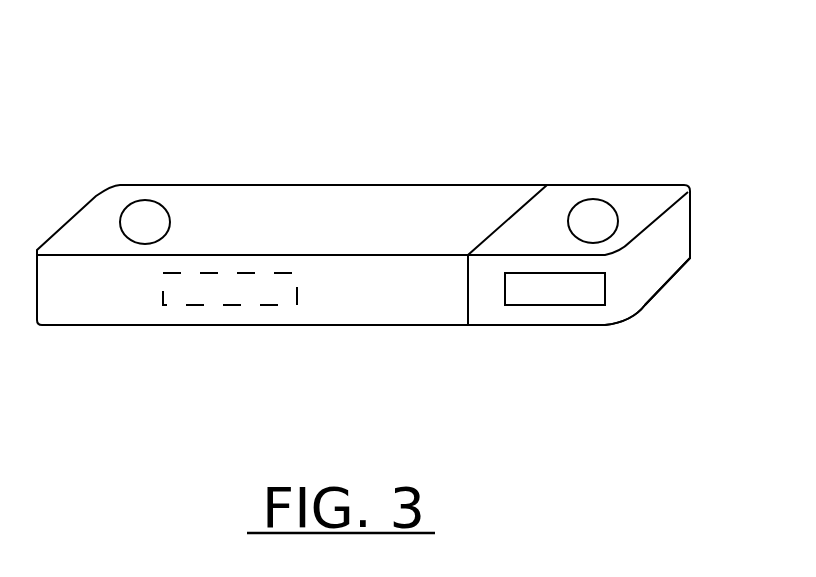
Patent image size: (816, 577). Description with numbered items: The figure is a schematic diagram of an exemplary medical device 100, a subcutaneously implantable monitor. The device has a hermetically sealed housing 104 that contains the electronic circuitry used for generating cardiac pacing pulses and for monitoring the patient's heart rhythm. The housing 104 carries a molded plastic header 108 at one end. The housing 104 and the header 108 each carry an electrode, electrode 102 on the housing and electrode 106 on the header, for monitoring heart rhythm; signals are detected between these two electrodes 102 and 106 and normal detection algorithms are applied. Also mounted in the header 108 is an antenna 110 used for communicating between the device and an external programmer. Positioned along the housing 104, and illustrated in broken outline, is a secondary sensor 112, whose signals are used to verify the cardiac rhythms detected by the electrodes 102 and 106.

The medical device 100 is at (372, 98).
The electrode 102 is at (138, 215).
The housing 104 is at (418, 185).
The electrode 106 is at (590, 218).
The header 108 is at (672, 252).
The antenna 110 is at (548, 288).
The sensor 112 is at (217, 305).